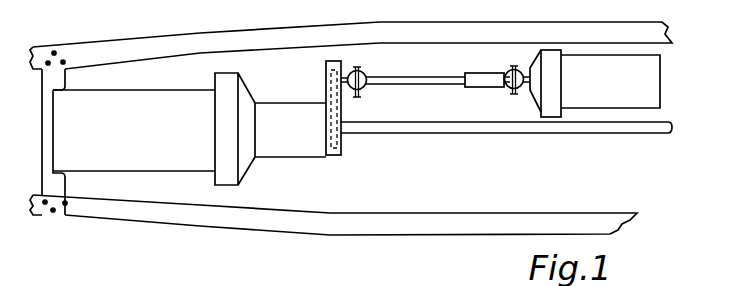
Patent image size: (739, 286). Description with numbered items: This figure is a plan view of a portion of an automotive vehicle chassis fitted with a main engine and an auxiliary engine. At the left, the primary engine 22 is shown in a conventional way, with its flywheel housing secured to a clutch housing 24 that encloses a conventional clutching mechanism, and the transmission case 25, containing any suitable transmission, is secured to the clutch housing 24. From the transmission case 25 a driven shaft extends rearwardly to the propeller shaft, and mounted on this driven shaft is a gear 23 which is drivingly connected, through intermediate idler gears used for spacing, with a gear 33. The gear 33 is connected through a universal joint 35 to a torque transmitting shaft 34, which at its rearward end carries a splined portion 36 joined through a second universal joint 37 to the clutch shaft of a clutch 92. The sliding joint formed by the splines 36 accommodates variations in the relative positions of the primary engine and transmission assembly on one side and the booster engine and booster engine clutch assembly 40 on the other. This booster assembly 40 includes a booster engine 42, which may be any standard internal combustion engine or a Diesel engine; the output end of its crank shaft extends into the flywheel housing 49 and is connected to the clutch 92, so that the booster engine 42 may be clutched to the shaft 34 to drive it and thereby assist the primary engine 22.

The primary engine 22 is at (134, 130).
The gear 23 is at (341, 141).
The clutch housing 24 is at (242, 163).
The transmission case 25 is at (281, 145).
The gear 33 is at (326, 83).
The torque transmitting shaft 34 is at (383, 80).
The universal joint 35 is at (365, 75).
The splined portion 36 is at (491, 82).
The second universal joint 37 is at (508, 73).
The booster engine and booster engine clutch assembly 40 is at (600, 106).
The booster engine 42 is at (610, 82).
The flywheel housing 49 is at (548, 110).
The clutch 92 is at (538, 92).